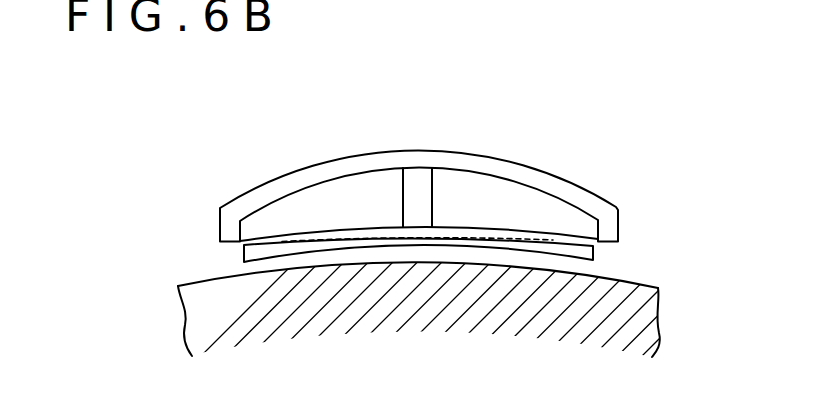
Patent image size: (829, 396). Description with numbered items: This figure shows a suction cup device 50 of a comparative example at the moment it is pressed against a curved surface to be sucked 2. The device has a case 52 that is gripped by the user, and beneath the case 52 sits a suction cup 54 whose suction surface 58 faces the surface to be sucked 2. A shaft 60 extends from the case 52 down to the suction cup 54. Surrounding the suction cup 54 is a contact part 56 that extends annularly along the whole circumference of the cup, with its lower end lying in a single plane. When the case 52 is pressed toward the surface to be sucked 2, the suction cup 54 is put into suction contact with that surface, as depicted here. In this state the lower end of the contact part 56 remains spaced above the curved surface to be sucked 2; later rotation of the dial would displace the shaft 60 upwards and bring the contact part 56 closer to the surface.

The suction cup device 50 is at (463, 119).
The case 52 is at (293, 172).
The suction cup 54 is at (478, 226).
The contact part 56 is at (618, 243).
The suction surface 58 is at (548, 254).
The shaft 60 is at (403, 197).
The surface to be sucked 2 is at (628, 281).